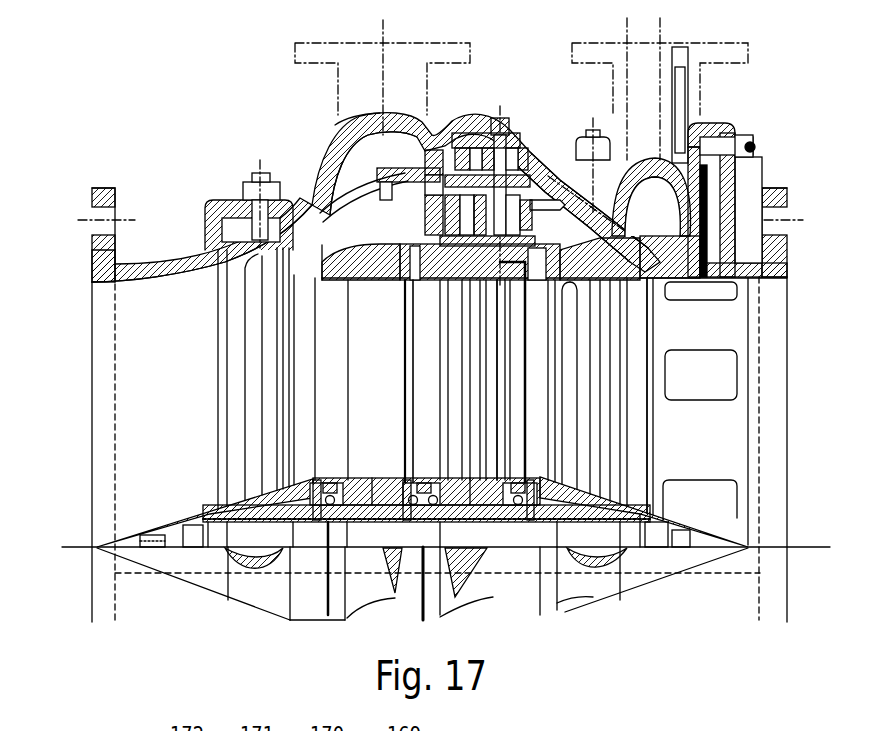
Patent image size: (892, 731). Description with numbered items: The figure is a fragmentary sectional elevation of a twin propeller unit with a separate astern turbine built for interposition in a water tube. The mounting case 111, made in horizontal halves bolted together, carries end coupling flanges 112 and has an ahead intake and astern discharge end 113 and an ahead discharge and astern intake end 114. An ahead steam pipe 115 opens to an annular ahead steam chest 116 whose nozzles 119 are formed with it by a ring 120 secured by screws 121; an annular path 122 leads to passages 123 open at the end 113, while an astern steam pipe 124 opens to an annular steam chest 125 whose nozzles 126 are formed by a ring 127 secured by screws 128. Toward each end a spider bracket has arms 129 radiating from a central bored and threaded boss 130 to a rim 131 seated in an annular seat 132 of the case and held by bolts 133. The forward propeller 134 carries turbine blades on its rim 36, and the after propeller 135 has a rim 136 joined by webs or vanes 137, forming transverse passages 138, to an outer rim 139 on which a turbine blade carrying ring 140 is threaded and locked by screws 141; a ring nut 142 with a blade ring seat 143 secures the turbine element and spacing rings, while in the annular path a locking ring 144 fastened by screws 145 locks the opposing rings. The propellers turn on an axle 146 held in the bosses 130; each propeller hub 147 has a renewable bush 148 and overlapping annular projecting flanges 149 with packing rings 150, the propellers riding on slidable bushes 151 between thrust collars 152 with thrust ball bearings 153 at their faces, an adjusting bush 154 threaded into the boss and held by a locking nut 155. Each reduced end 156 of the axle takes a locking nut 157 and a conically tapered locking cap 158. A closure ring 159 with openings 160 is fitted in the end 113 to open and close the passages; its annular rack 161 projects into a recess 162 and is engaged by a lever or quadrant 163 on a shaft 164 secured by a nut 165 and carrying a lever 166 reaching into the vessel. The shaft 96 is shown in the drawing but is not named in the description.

The rim 36 is at (468, 282).
The shaft 96 is at (408, 284).
The mounting case 111 is at (140, 263).
The end coupling flanges 112 is at (113, 190).
The ahead intake and astern discharge end 113 is at (770, 323).
The ahead discharge and astern intake end 114 is at (143, 327).
The ahead steam pipe 115 is at (640, 55).
The annular ahead steam chest 116 is at (648, 193).
The nozzles 119 is at (585, 212).
The ring 120 is at (525, 205).
The screws 121 is at (595, 156).
The annular path 122 is at (507, 160).
The passages 123 is at (663, 265).
The astern steam pipe 124 is at (388, 57).
The annular steam chest 125 is at (333, 158).
The nozzles 126 is at (432, 140).
The ring 127 is at (363, 135).
The screws 128 is at (430, 132).
The arms 129 is at (262, 352).
The boss 130 is at (218, 472).
The rim 131 is at (207, 277).
The annular seat 132 is at (237, 217).
The bolts 133 is at (247, 190).
The propeller 134 is at (475, 381).
The propeller 135 is at (369, 380).
The rim 136 is at (398, 280).
The webs or vanes 137 is at (328, 252).
The transverse passages 138 is at (355, 241).
The outer rim 139 is at (362, 192).
The turbine blade carrying ring 140 is at (388, 192).
The screws 141 is at (340, 157).
The ring nut 142 is at (520, 187).
The blade ring seat 143 is at (465, 263).
The locking ring 144 is at (508, 132).
The screws 145 is at (500, 118).
The axle 146 is at (227, 537).
The propeller hub 147 is at (347, 490).
The renewable bush 148 is at (372, 490).
The annular projecting flange 149 is at (333, 484).
The packing ring 150 is at (320, 486).
The slidable bushes 151 is at (370, 518).
The thrust collars 152 is at (313, 518).
The thrust ball bearings 153 is at (333, 518).
The adjusting bush 154 is at (243, 521).
The locking nut 155 is at (212, 506).
The reduced end 156 is at (157, 543).
The locking nut 157 is at (190, 550).
The conically tapered locking cap 158 is at (147, 557).
The closure ring 159 is at (682, 435).
The openings 160 is at (720, 500).
The annular rack 161 is at (760, 262).
The recess 162 is at (707, 208).
The lever or quadrant 163 is at (752, 148).
The shaft 164 is at (727, 127).
The nut 165 is at (747, 134).
The lever 166 is at (680, 95).